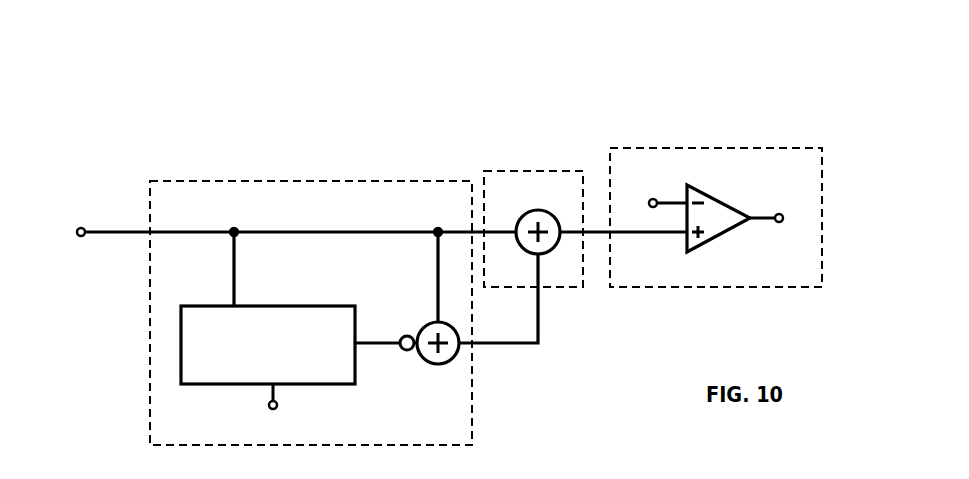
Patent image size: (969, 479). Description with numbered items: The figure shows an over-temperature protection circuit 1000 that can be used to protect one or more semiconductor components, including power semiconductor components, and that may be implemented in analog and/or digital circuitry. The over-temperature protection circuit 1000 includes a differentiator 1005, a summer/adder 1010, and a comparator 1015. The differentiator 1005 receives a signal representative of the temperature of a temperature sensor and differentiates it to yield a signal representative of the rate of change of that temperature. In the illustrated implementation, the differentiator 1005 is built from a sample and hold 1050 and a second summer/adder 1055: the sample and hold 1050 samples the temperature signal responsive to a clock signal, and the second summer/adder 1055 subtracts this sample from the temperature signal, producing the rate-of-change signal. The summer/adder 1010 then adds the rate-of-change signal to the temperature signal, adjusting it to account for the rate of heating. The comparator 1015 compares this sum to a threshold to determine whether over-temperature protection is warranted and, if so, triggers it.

The over-temperature protection circuit 1000 is at (812, 64).
The differentiator 1005 is at (313, 182).
The sample and hold 1050 is at (195, 384).
The second summer/adder 1055 is at (432, 365).
The summer/adder 1010 is at (529, 170).
The comparator 1015 is at (717, 147).